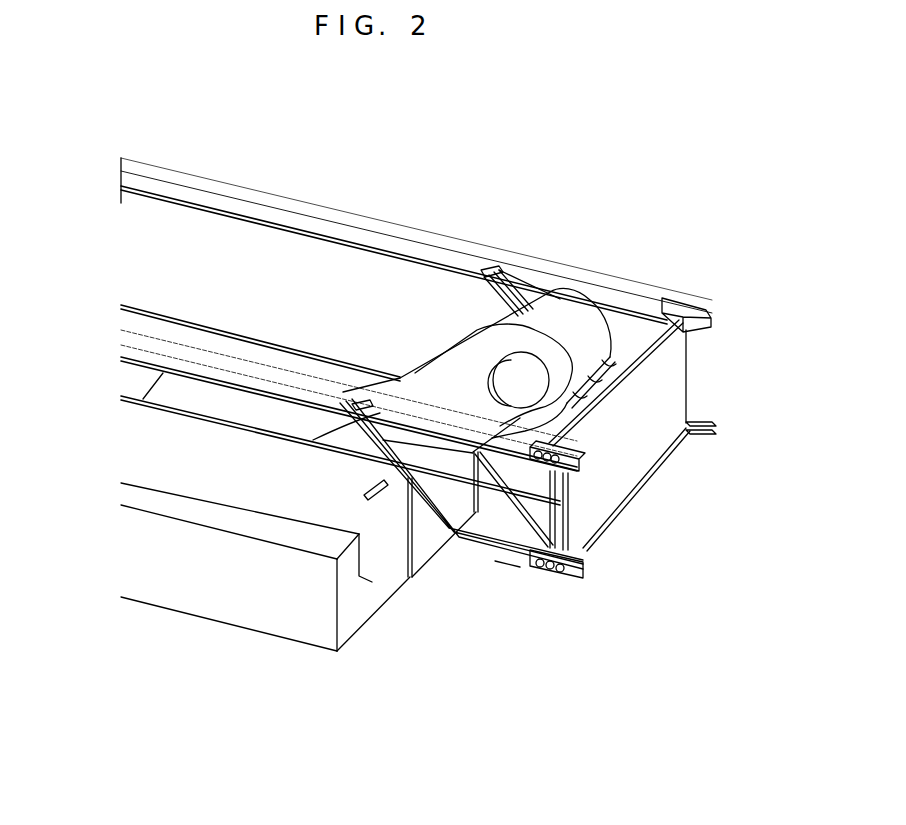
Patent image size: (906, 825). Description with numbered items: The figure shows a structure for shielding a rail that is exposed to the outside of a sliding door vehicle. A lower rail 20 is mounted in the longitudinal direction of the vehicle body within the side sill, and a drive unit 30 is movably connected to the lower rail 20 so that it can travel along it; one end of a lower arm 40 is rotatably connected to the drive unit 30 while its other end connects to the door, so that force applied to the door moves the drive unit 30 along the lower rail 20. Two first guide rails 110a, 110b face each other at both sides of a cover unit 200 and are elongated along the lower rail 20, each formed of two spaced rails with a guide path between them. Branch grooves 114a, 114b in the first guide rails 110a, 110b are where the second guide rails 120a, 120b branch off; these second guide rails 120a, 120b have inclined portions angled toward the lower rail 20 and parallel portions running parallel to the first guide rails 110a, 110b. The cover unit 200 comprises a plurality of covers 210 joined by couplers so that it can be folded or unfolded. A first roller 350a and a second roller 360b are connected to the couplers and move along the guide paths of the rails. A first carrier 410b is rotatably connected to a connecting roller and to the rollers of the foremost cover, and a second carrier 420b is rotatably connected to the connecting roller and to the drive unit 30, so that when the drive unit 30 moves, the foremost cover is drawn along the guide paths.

The lower rail 20 is at (225, 590).
The drive unit 30 is at (132, 437).
The lower arm 40 is at (567, 303).
The first guide rail 110a is at (258, 183).
The first guide rail 110b is at (122, 334).
The branch groove 114a is at (488, 268).
The branch groove 114b is at (360, 406).
The second guide rail 120a is at (700, 433).
The second guide rail 120b is at (502, 574).
The cover unit 200 is at (646, 455).
The cover 210 is at (676, 372).
The first roller 350a is at (705, 302).
The second roller 360b is at (541, 568).
The first carrier 410b is at (508, 496).
The second carrier 420b is at (378, 494).